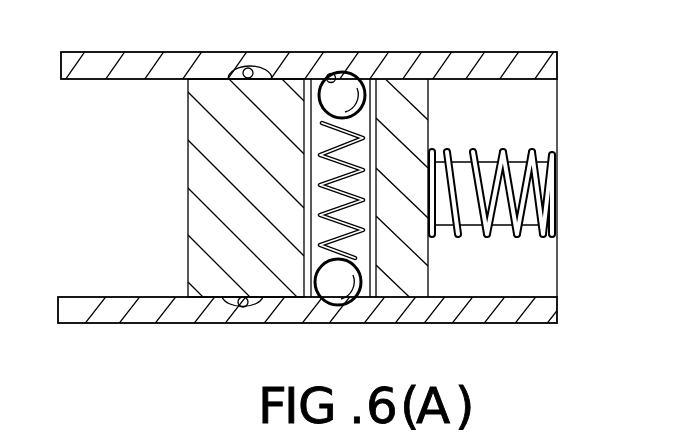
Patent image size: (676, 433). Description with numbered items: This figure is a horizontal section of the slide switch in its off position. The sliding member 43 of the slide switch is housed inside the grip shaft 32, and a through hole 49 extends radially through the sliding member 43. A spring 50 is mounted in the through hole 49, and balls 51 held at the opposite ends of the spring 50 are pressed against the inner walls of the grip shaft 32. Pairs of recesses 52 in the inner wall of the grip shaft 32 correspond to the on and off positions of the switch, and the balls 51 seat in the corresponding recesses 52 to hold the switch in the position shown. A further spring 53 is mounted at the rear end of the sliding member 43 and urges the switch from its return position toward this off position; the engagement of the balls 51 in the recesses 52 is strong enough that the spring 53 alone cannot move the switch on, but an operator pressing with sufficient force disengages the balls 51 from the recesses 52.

The grip shaft 32 is at (108, 313).
The sliding member 43 is at (210, 121).
The through hole 49 is at (367, 150).
The spring 50 is at (372, 250).
The balls 51 is at (350, 90).
The recesses 52 is at (247, 69).
The spring 53 is at (553, 162).